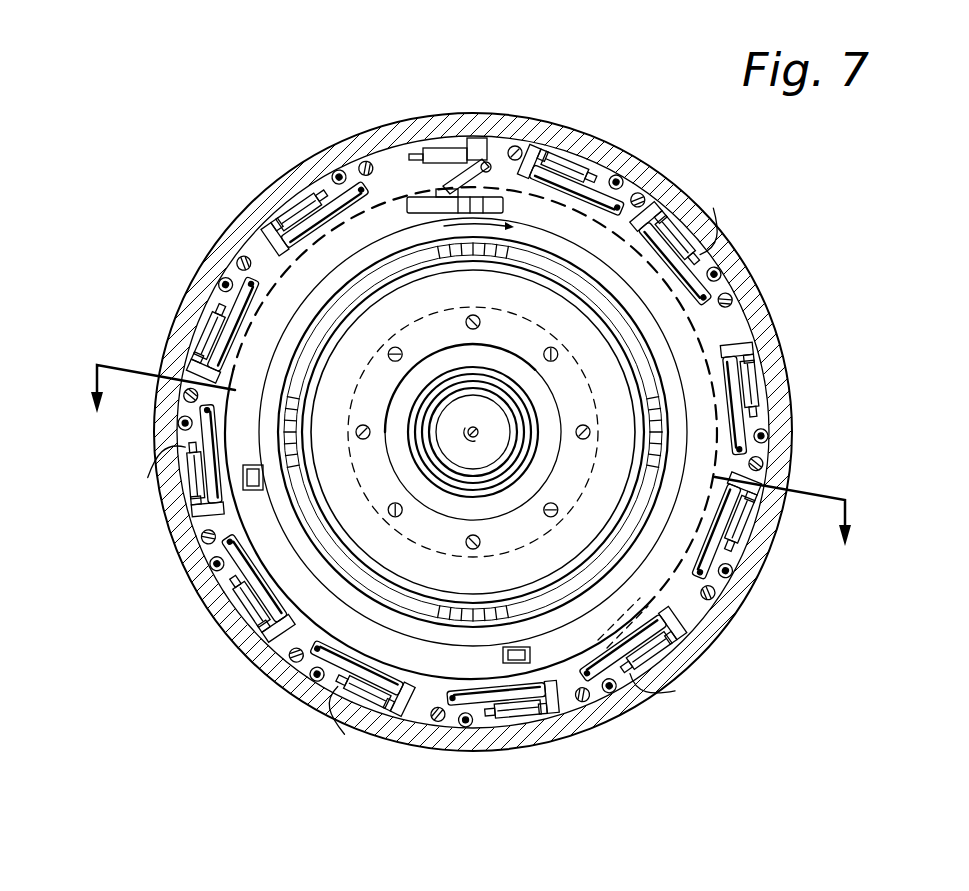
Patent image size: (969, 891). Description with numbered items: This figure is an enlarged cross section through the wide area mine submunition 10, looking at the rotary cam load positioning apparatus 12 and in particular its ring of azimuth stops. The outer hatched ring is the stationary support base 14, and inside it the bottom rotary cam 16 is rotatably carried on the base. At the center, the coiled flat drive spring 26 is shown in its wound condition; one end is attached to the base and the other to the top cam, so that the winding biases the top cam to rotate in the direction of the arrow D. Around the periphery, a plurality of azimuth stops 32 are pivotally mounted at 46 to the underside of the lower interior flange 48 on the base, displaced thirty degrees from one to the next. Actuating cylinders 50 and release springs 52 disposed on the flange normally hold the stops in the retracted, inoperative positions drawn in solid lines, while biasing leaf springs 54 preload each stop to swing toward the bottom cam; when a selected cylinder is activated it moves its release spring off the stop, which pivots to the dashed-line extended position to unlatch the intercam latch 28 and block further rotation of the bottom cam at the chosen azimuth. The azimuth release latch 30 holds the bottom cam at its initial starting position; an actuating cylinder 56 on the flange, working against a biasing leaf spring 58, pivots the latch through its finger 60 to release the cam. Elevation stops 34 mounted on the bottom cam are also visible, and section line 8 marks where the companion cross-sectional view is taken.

The wide area mine (WAM) submunition 10 is at (556, 50).
The rotary cam load positioning apparatus 12 is at (790, 422).
The stationary support base 14 is at (762, 268).
The bottom rotary cam 16 is at (300, 316).
The coiled flat drive spring 26 is at (537, 460).
The intercam latch 28 is at (515, 200).
The azimuth release latch 30 is at (495, 193).
The azimuth stops 32 is at (321, 205).
The elevation stops 34 is at (531, 656).
The pivot mounting of azimuth stops 46 is at (176, 440).
The lower interior flange 48 is at (655, 215).
The actuating cylinders 50 is at (296, 207).
The release springs 52 is at (250, 262).
The biasing leaf springs 54 is at (276, 232).
The actuating cylinder 56 is at (438, 150).
The biasing leaf spring 58 is at (415, 157).
The finger 60 is at (458, 185).
The section line 8— 8 is at (461, 461).
The arrow D is at (473, 218).